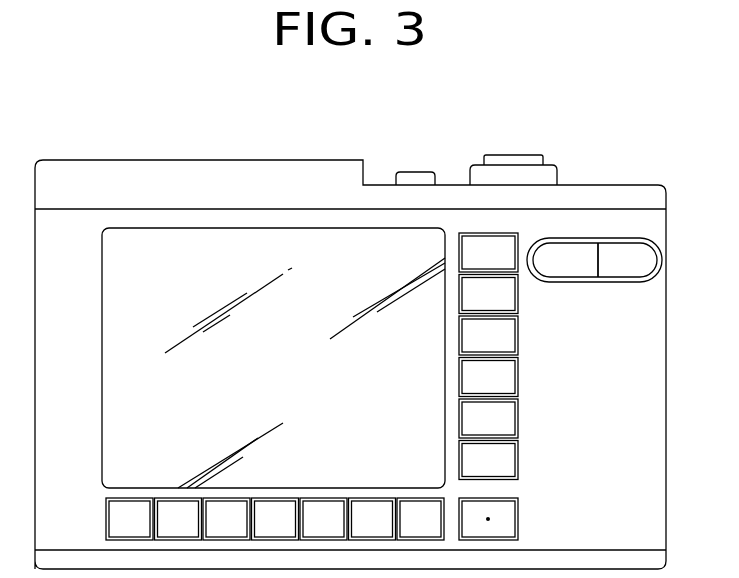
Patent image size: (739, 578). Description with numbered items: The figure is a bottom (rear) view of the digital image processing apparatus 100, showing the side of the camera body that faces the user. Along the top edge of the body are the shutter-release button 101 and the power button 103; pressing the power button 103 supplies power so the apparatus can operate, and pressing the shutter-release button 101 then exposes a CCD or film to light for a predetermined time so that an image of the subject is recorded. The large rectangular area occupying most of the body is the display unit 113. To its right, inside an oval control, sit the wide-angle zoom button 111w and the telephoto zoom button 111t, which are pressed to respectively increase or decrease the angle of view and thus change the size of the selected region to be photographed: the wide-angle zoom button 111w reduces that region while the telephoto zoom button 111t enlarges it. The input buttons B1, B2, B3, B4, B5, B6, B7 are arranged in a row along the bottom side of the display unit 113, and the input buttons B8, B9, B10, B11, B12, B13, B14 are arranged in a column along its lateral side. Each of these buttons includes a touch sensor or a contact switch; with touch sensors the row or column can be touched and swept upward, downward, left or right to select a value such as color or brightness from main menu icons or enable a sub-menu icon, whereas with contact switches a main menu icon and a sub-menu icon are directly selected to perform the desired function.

The digital image processing apparatus 100 is at (610, 143).
The shutter-release button 101 is at (515, 160).
The power button 103 is at (415, 172).
The wide-angle zoom button 111w is at (594, 260).
The telephoto zoom button 111t is at (622, 260).
The display unit 113 is at (172, 245).
The input button B1 is at (129, 519).
The input button B2 is at (178, 519).
The input button B3 is at (226, 519).
The input button B4 is at (275, 519).
The input button B5 is at (323, 519).
The input button B6 is at (372, 519).
The input button B7 is at (420, 519).
The input button B8 is at (488, 252).
The input button B9 is at (488, 294).
The input button B10 is at (488, 335).
The input button B11 is at (488, 377).
The input button B12 is at (488, 418).
The input button B13 is at (488, 460).
The input button B14 is at (518, 519).